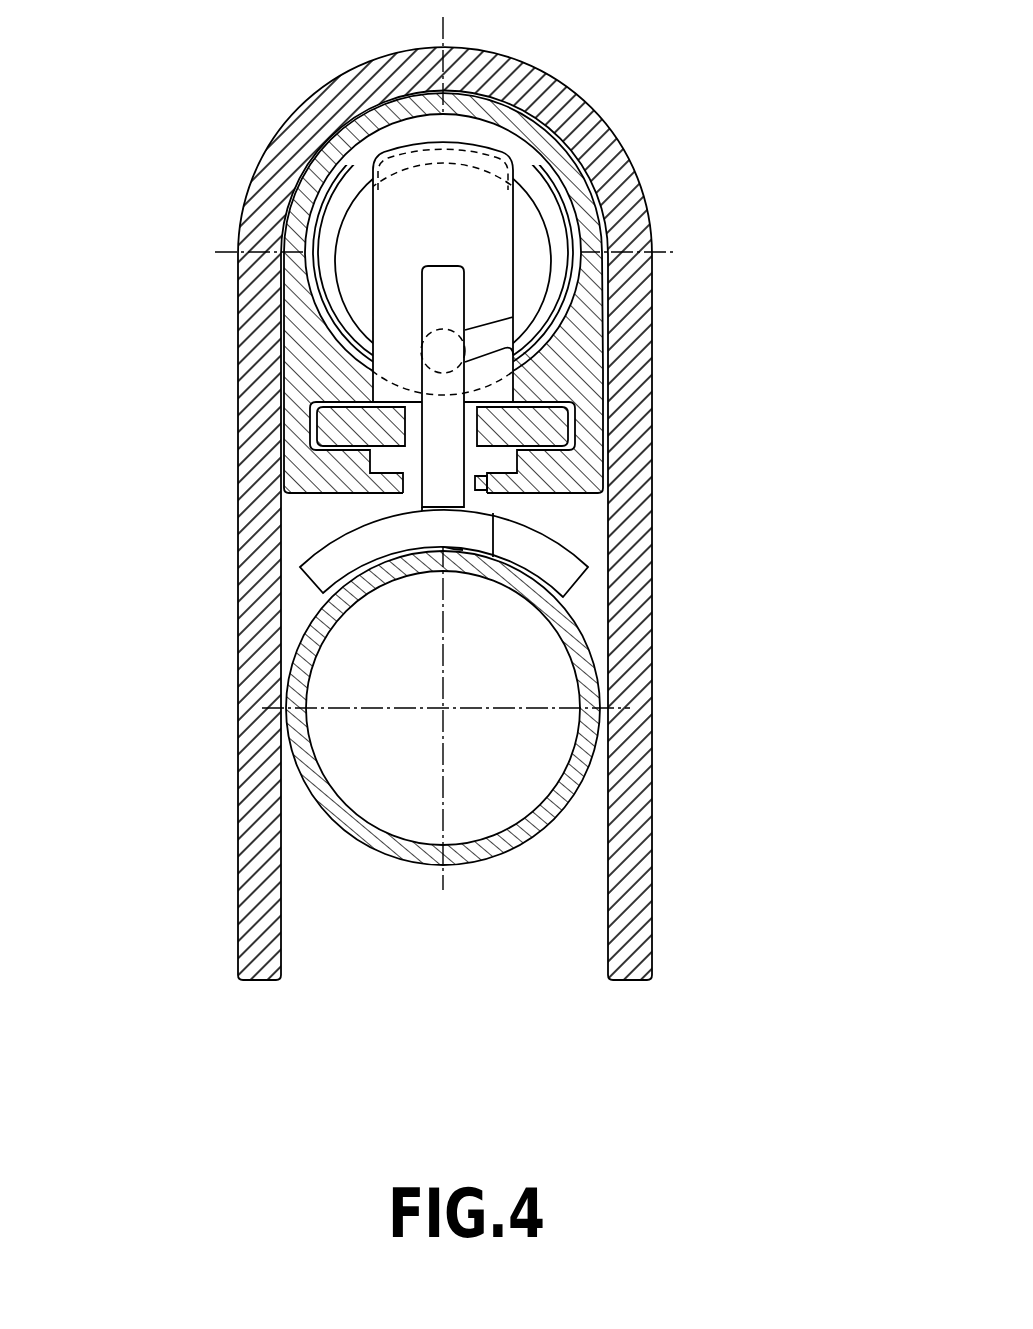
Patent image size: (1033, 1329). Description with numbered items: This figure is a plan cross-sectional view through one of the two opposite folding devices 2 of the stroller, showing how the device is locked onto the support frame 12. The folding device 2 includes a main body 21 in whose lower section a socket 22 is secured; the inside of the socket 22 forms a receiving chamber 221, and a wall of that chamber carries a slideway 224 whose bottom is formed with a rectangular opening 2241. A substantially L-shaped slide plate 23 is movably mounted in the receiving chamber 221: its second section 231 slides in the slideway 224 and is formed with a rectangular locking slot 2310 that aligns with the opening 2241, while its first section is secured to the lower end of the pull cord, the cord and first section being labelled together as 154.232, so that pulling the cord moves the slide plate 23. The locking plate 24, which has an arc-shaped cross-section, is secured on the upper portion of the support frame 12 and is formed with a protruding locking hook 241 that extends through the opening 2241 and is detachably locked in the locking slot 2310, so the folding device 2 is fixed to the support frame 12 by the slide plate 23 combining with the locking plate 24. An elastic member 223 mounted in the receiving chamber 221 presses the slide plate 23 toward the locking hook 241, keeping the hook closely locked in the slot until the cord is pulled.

The folding device 2 is at (296, 56).
The support frame 12 is at (578, 637).
The main body 21 is at (265, 200).
The socket 22 is at (379, 311).
The receiving chamber 221 is at (520, 157).
The elastic member 223 is at (550, 232).
The slideway 224 is at (545, 424).
The rectangular opening 2241 is at (475, 482).
The slide plate 23 is at (305, 455).
The second section 231 is at (475, 424).
The rectangular locking slot 2310 is at (468, 358).
The pull cord and first section of slide plate 154.232 is at (370, 373).
The locking plate 24 is at (550, 562).
The locking hook 241 is at (455, 296).